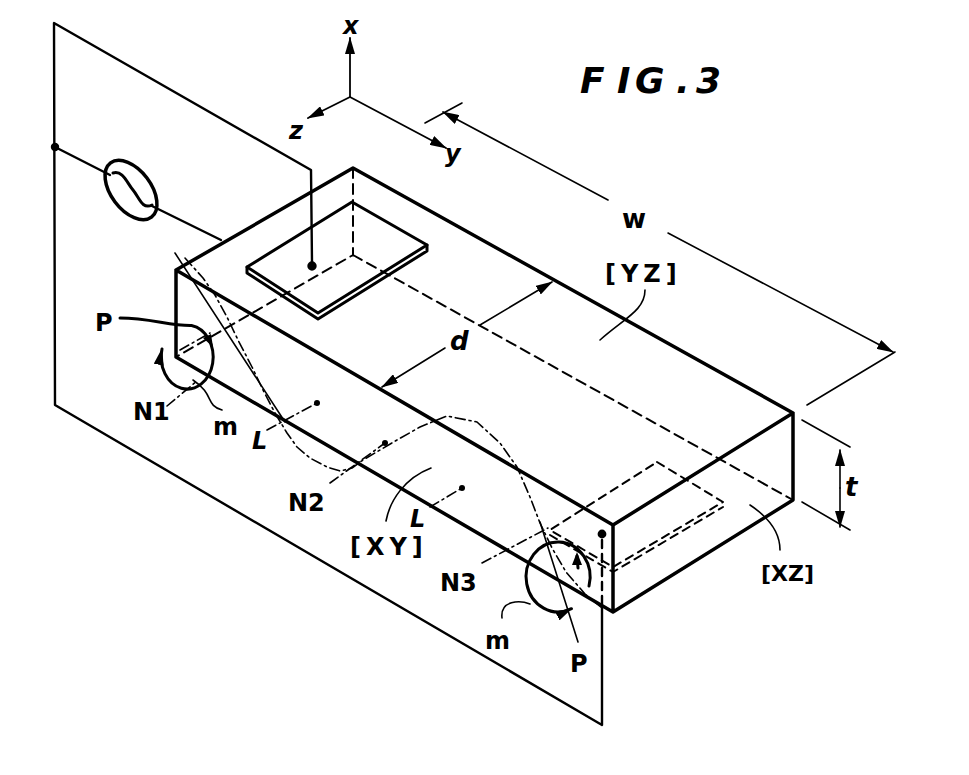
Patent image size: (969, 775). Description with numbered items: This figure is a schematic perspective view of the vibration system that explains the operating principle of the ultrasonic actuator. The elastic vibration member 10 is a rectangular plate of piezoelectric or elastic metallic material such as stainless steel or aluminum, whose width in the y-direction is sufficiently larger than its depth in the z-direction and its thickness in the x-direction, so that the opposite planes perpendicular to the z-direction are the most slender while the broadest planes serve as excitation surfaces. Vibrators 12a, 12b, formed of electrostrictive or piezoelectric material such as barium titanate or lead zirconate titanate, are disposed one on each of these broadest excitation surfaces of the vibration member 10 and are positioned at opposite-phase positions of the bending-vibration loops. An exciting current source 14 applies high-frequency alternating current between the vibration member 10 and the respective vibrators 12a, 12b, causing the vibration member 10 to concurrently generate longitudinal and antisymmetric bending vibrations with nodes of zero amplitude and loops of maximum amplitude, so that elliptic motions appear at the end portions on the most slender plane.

The elastic vibration member 10 is at (734, 374).
The vibrator 12a is at (395, 238).
The vibrator 12b is at (683, 521).
The exciting current source 14 is at (153, 174).